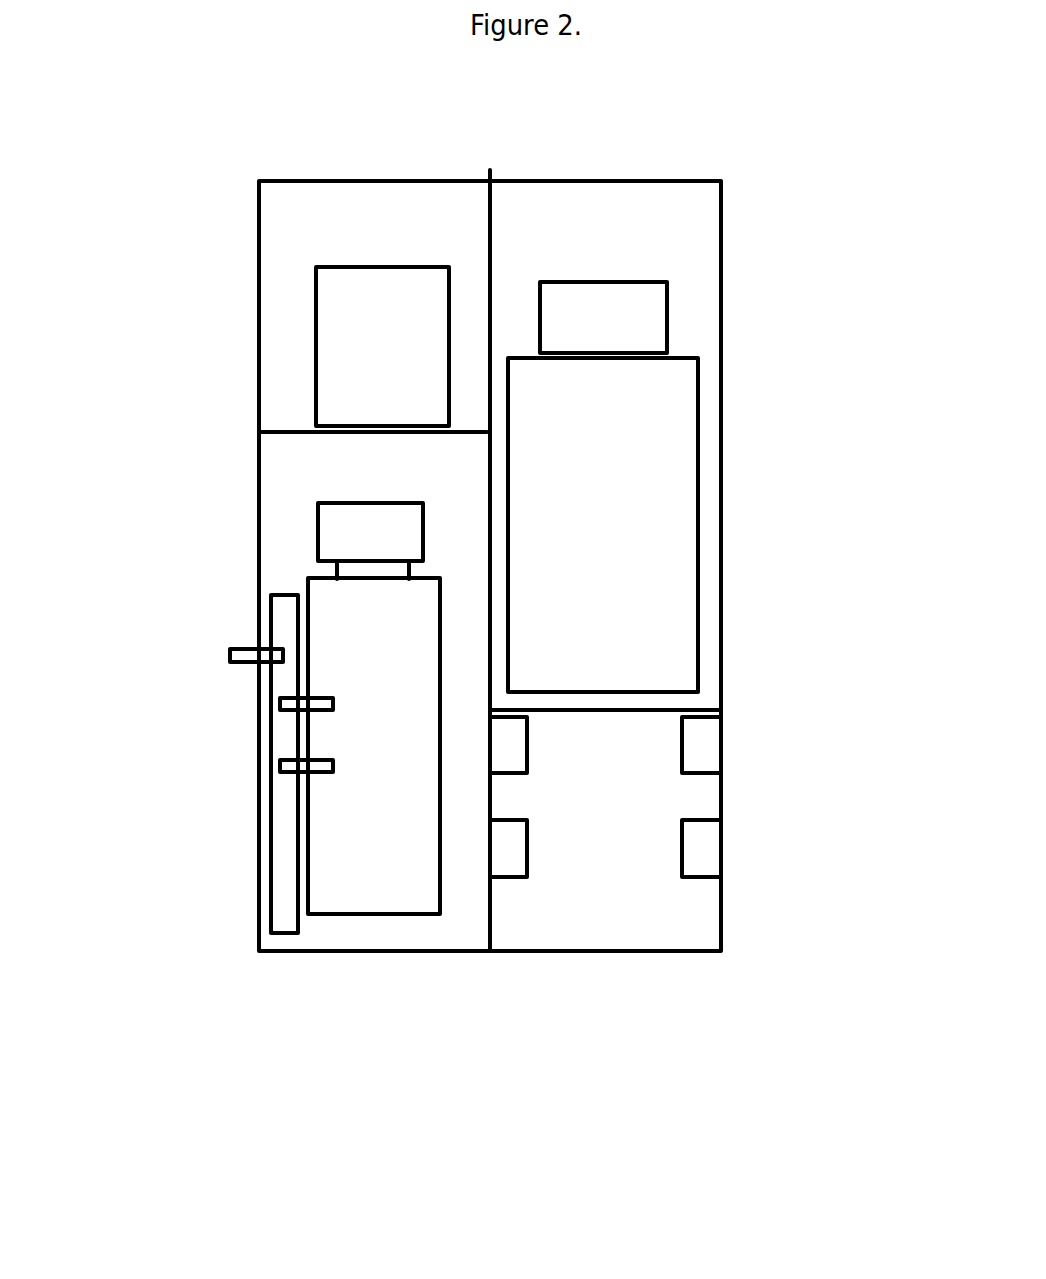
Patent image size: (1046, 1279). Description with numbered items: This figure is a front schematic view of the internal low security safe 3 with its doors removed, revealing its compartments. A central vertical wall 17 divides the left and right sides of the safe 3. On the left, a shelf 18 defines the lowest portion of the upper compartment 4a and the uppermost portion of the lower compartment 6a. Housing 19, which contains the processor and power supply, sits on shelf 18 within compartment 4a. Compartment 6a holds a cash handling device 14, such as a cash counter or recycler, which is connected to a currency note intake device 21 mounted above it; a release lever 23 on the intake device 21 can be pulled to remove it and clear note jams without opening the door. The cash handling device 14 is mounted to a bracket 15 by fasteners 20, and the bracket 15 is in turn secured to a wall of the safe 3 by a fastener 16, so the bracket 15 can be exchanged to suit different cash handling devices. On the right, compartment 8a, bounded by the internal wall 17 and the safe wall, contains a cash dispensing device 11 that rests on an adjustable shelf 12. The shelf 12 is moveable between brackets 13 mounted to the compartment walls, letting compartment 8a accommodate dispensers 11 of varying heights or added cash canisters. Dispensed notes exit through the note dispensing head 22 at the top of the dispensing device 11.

The internal low security safe 3 is at (515, 557).
The compartment 4a is at (280, 277).
The compartment 6a is at (352, 932).
The compartment 8a is at (638, 240).
The cash dispensing device 11 is at (652, 463).
The adjustable shelf 12 is at (652, 713).
The brackets 13 is at (707, 818).
The cash handling device 14 is at (353, 832).
The bracket 15 is at (297, 832).
The fastener 16 is at (232, 655).
The central vertical wall 17 is at (488, 240).
The shelf 18 is at (288, 428).
The housing 19 is at (316, 347).
The fasteners 20 is at (333, 766).
The currency note intake device 21 is at (333, 533).
The note dispensing head 22 is at (577, 341).
The release lever 23 is at (372, 578).